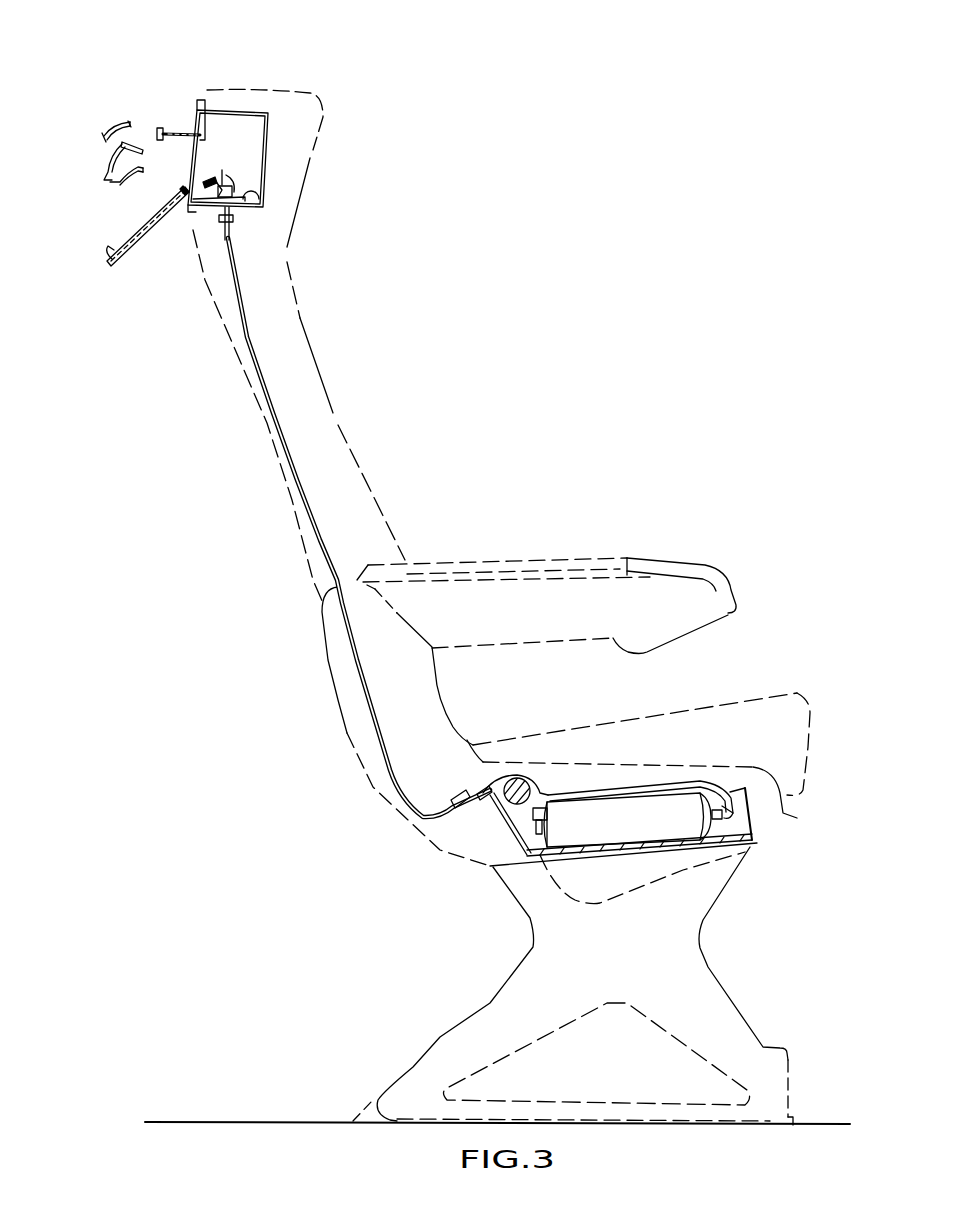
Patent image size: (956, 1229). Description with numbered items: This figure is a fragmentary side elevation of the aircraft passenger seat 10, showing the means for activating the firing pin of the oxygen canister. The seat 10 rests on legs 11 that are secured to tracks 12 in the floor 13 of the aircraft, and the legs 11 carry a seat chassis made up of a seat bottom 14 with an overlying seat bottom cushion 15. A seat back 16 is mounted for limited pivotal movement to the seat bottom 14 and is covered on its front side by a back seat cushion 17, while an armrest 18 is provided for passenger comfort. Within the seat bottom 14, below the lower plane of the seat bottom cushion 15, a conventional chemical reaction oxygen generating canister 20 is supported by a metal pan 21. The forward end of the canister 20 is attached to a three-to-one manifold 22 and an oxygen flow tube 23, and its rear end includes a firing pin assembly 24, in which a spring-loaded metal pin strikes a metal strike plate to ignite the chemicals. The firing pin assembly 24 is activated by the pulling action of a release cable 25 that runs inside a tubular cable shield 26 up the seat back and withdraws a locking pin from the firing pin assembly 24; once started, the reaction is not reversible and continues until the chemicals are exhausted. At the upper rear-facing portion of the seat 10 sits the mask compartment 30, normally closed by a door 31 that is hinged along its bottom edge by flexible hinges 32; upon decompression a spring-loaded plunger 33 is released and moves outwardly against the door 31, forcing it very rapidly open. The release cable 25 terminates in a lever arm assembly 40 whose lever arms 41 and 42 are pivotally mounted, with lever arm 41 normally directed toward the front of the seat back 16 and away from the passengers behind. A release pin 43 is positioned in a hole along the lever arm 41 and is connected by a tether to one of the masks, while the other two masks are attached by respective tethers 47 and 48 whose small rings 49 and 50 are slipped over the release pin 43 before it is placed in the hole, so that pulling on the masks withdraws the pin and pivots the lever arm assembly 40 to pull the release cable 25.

The aircraft passenger seat 10 is at (478, 482).
The legs 11 is at (713, 1013).
The tracks 12 is at (323, 1120).
The floor 13 is at (386, 1159).
The seat bottom 14 is at (776, 827).
The seat bottom cushion 15 is at (792, 723).
The seat back 16 is at (302, 548).
The back seat cushion 17 is at (325, 411).
The armrest 18 is at (663, 603).
The oxygen generating canister 20 is at (673, 823).
The metal pan 21 is at (490, 866).
The three-to-one manifold 22 is at (755, 805).
The oxygen flow tube 23 is at (628, 793).
The firing pin assembly 24 is at (500, 820).
The release cable 25 is at (232, 180).
The tubular cable shield 26 is at (290, 452).
The mask compartment 30 is at (237, 100).
The door 31 is at (150, 231).
The flexible hinges 32 is at (109, 263).
The spring-loaded plunger 33 is at (181, 128).
The lever arm assembly 40 is at (260, 198).
The lever arm 41 is at (193, 209).
The lever arm 42 is at (222, 170).
The release pin 43 is at (136, 143).
The tether 47 is at (105, 131).
The tether 48 is at (118, 190).
The ring 49 is at (131, 121).
The ring 50 is at (143, 173).